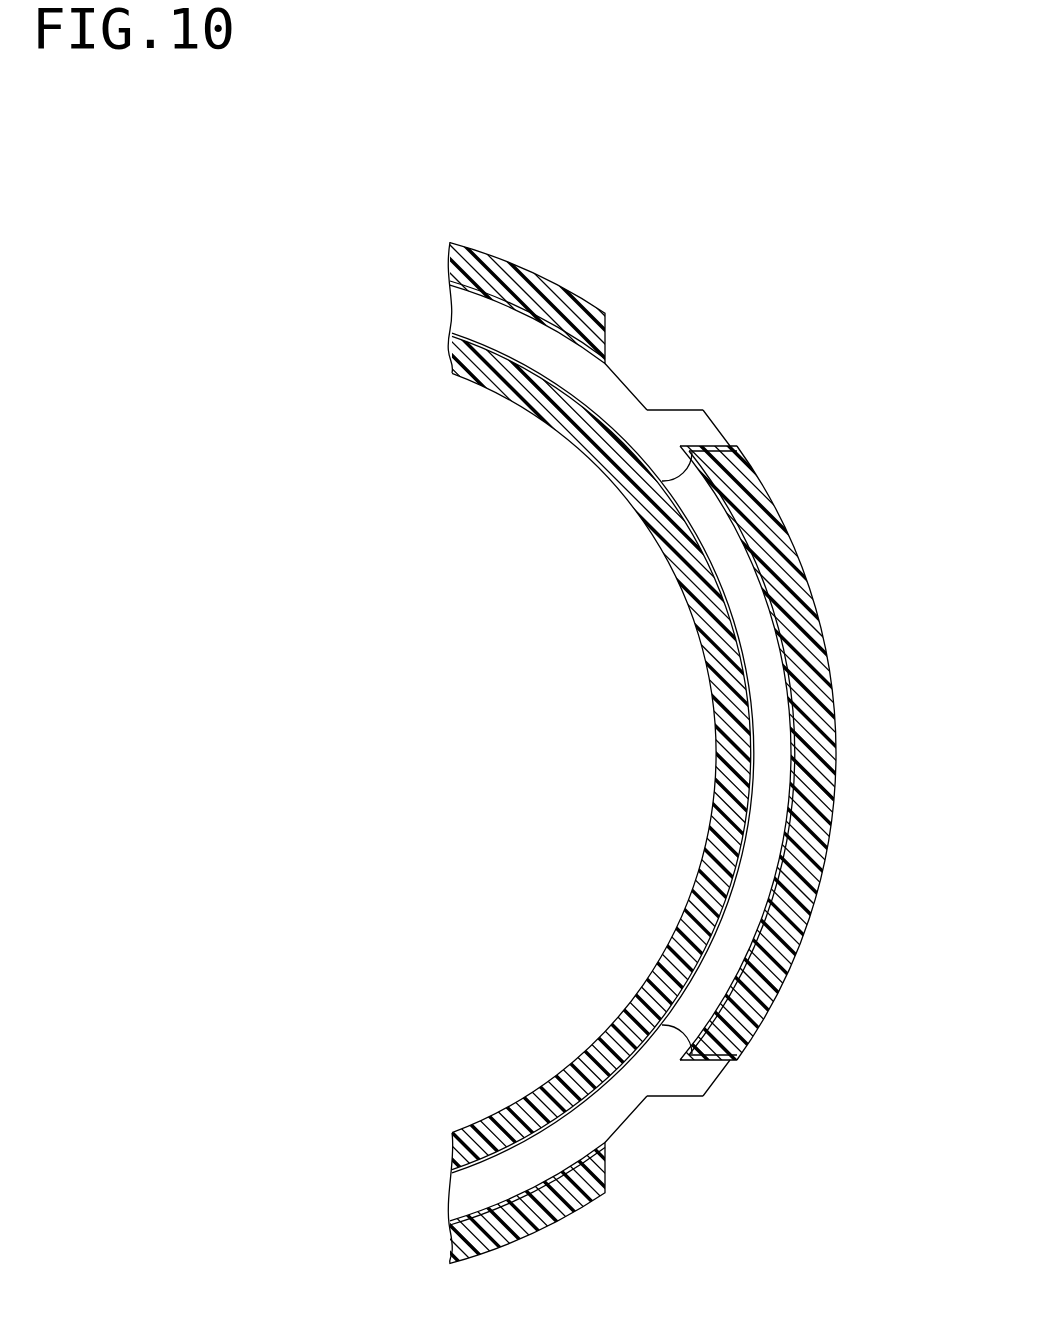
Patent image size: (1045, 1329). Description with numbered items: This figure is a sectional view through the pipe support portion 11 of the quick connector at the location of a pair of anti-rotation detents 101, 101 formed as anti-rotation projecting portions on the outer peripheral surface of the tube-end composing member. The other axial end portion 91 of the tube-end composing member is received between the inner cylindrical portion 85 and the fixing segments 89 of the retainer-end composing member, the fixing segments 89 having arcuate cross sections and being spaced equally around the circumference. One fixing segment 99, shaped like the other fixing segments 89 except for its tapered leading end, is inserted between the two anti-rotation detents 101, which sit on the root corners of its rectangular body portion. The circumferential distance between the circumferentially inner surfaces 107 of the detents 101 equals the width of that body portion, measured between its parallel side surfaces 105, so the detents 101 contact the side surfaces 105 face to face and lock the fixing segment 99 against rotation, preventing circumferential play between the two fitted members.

The pipe support portion 11 is at (627, 390).
The inner cylindrical portion 85 is at (692, 603).
The fixing segments 89 is at (577, 297).
The other axial end portion 91 is at (468, 313).
The fixing segment 99 is at (800, 549).
The anti-rotation detents 101 is at (704, 410).
The side surfaces of the body portion 105 is at (734, 447).
The circumferentially inner surfaces 107 is at (620, 463).